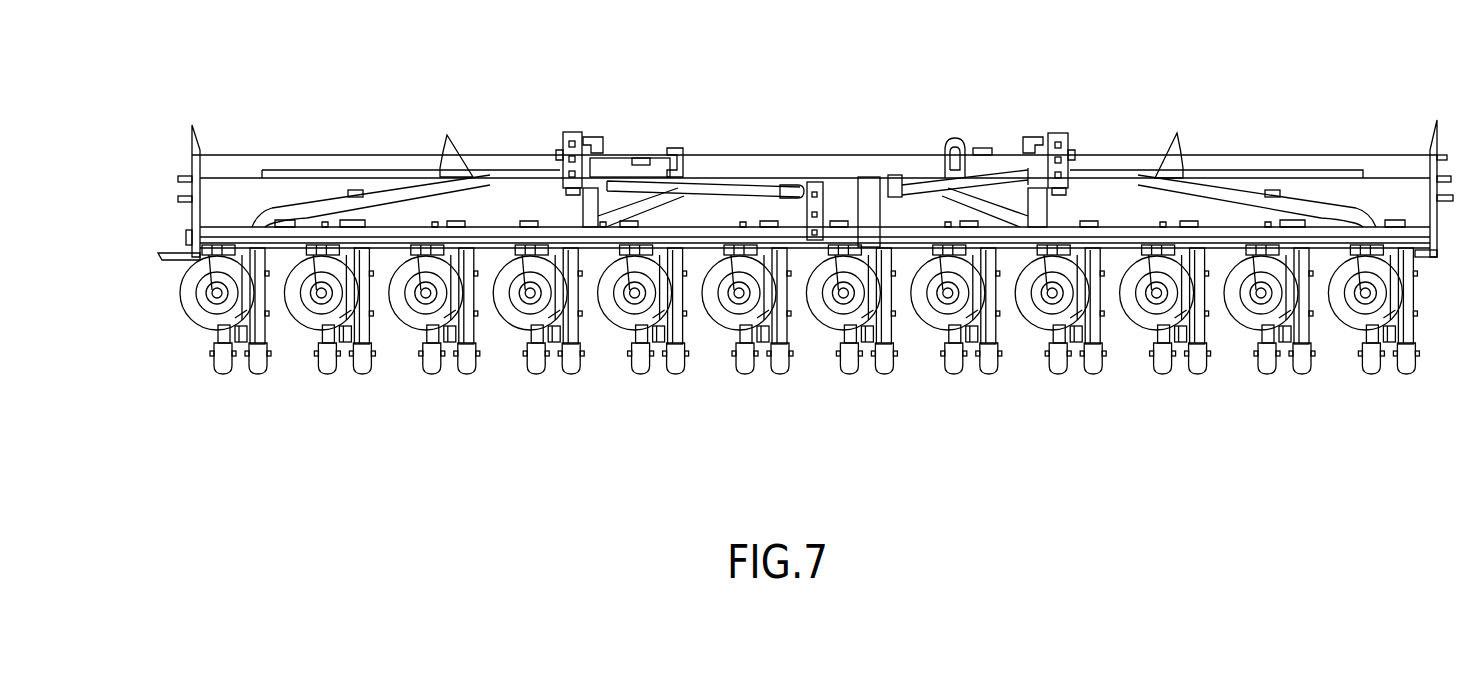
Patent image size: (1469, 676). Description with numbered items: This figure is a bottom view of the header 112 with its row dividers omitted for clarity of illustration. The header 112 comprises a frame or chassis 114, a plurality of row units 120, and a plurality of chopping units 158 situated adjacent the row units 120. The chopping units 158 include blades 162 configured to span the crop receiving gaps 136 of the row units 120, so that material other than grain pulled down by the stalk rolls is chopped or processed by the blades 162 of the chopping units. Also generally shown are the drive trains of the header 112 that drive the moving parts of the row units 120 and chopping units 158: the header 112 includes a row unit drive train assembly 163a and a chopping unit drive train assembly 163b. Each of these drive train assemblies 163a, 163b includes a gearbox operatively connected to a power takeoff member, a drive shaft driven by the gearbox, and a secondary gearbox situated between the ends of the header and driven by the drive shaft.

The header 112 is at (662, 457).
The frame or chassis 114 is at (192, 258).
The row units 120 is at (428, 387).
The crop receiving gaps 136 is at (557, 362).
The chopping units 158 is at (733, 300).
The blades 162 is at (733, 328).
The row unit drive train assembly 163a is at (722, 172).
The chopping unit drive train assembly 163b is at (907, 172).